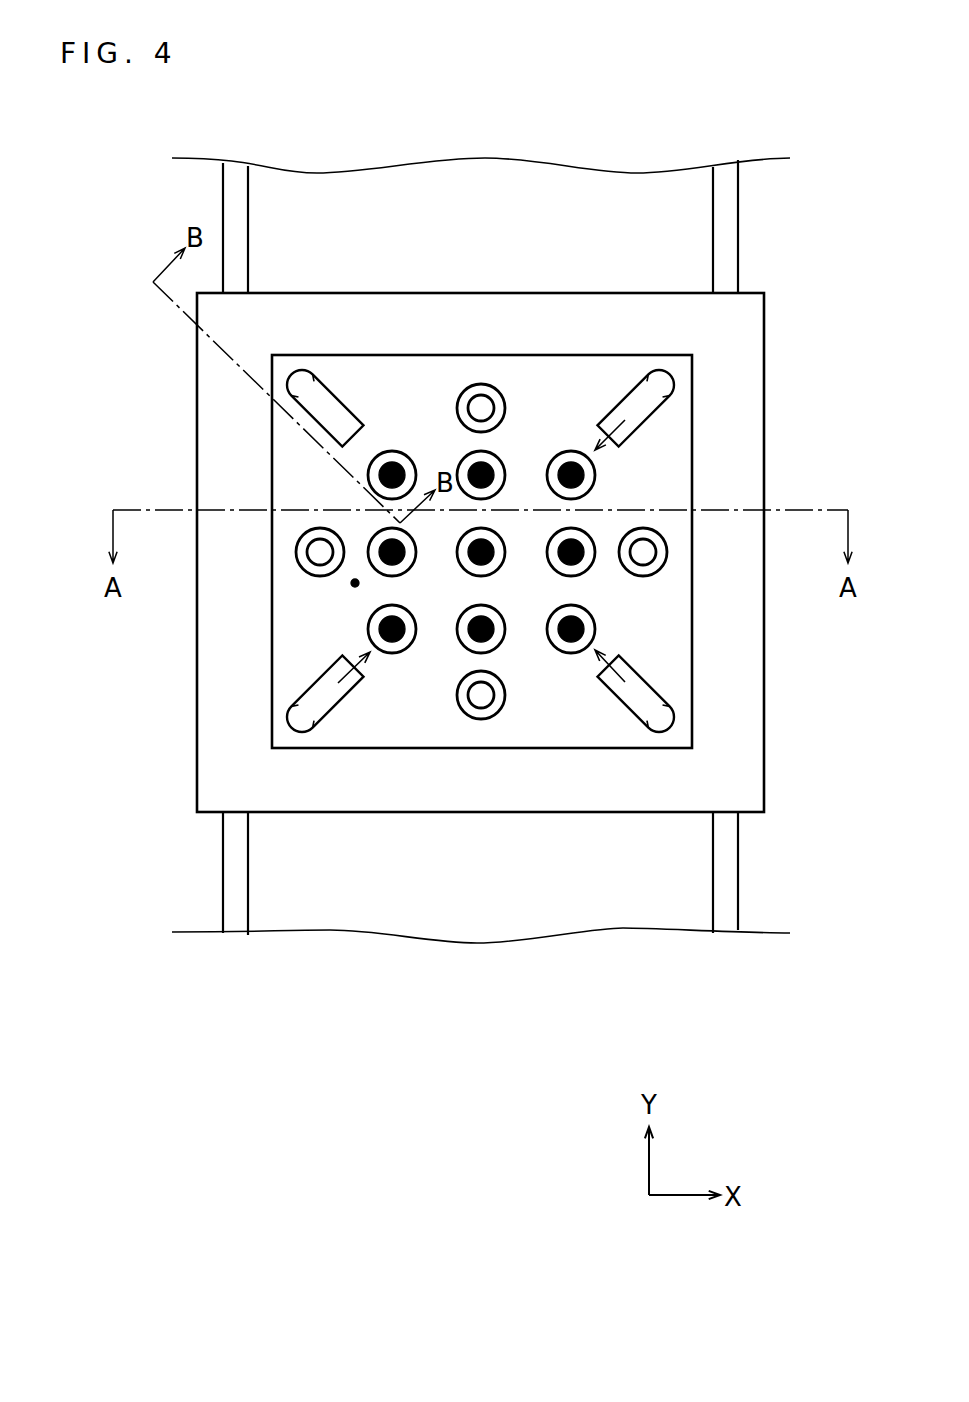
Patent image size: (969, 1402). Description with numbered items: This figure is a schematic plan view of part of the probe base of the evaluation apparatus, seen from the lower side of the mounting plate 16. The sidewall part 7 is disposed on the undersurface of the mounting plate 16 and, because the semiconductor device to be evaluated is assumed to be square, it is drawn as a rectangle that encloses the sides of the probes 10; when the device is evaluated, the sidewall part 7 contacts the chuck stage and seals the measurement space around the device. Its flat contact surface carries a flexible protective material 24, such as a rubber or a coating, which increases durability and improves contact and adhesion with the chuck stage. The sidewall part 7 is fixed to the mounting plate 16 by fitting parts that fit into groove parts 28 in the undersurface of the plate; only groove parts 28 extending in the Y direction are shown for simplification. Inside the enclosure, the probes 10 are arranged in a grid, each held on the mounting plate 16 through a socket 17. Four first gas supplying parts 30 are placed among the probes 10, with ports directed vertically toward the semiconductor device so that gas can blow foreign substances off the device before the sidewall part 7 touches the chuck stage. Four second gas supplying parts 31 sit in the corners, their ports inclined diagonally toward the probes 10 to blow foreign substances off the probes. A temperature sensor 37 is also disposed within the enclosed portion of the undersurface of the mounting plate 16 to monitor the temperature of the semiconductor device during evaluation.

The sidewall part 7 is at (327, 812).
The probes 10 is at (467, 642).
The mounting plate 16 is at (596, 187).
The socket 17 is at (498, 647).
The protective material 24 is at (610, 790).
The groove parts 28 is at (727, 252).
The first gas supplying parts 30 is at (297, 562).
The second gas supplying parts 31 is at (655, 688).
The temperature sensor 37 is at (350, 583).